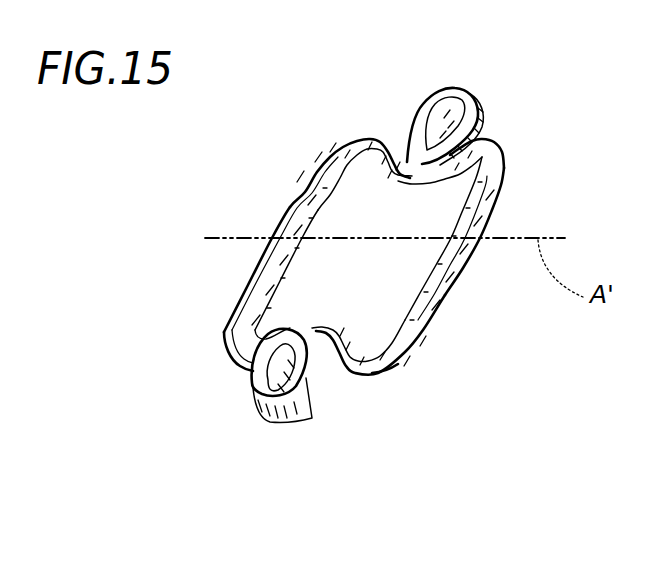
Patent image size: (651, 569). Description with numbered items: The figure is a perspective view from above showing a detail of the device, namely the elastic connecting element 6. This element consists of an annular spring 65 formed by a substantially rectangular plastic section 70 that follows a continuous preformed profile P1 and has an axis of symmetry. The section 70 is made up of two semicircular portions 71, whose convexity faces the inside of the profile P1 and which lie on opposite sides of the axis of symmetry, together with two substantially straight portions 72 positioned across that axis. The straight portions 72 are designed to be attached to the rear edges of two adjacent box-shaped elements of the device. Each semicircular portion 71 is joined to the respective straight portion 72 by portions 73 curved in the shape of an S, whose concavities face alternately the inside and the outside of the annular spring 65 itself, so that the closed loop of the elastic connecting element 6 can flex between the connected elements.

The plastic section 70 is at (320, 173).
The semicircular portions 71 is at (432, 88).
The straight portions 72 is at (489, 201).
The S-shaped curved portions 73 is at (351, 137).
The annular spring 65 is at (451, 303).
The elastic connecting element 6 is at (422, 334).
The preformed profile P1 is at (379, 376).